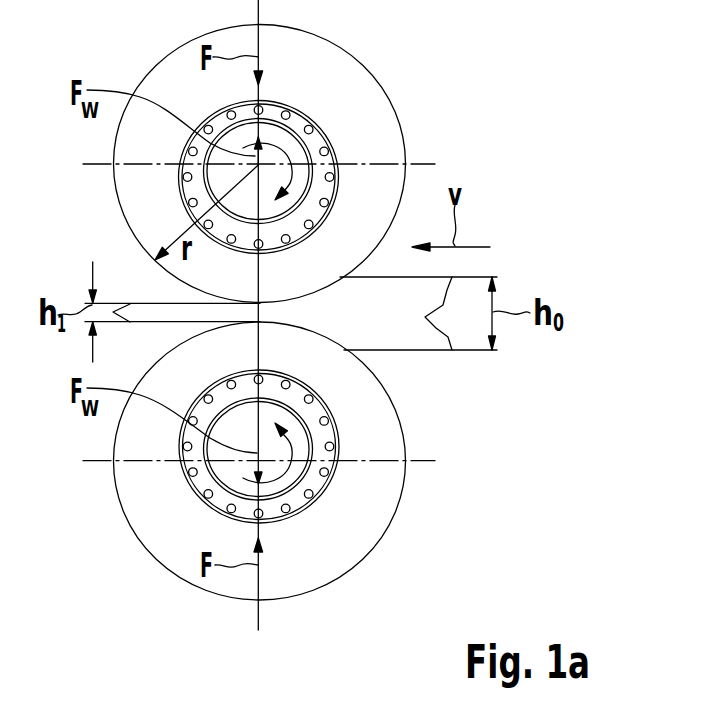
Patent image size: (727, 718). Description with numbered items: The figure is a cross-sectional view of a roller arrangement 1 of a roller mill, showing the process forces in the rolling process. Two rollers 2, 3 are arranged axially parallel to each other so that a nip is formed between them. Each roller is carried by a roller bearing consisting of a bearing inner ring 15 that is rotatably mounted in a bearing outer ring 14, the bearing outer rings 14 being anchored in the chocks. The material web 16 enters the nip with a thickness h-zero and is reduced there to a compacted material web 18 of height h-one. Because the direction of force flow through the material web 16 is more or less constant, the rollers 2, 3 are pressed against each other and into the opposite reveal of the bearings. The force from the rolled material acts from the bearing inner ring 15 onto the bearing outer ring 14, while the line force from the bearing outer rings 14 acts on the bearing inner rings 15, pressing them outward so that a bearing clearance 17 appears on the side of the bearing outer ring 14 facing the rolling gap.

The roller arrangement 1 is at (526, 51).
The roller 2 is at (370, 122).
The roller 3 is at (294, 342).
The bearing outer ring 14 is at (318, 130).
The bearing inner ring 15 is at (298, 128).
The material web 16 is at (392, 332).
The bearing clearance 17 is at (247, 233).
The compacted material web 18 is at (145, 323).